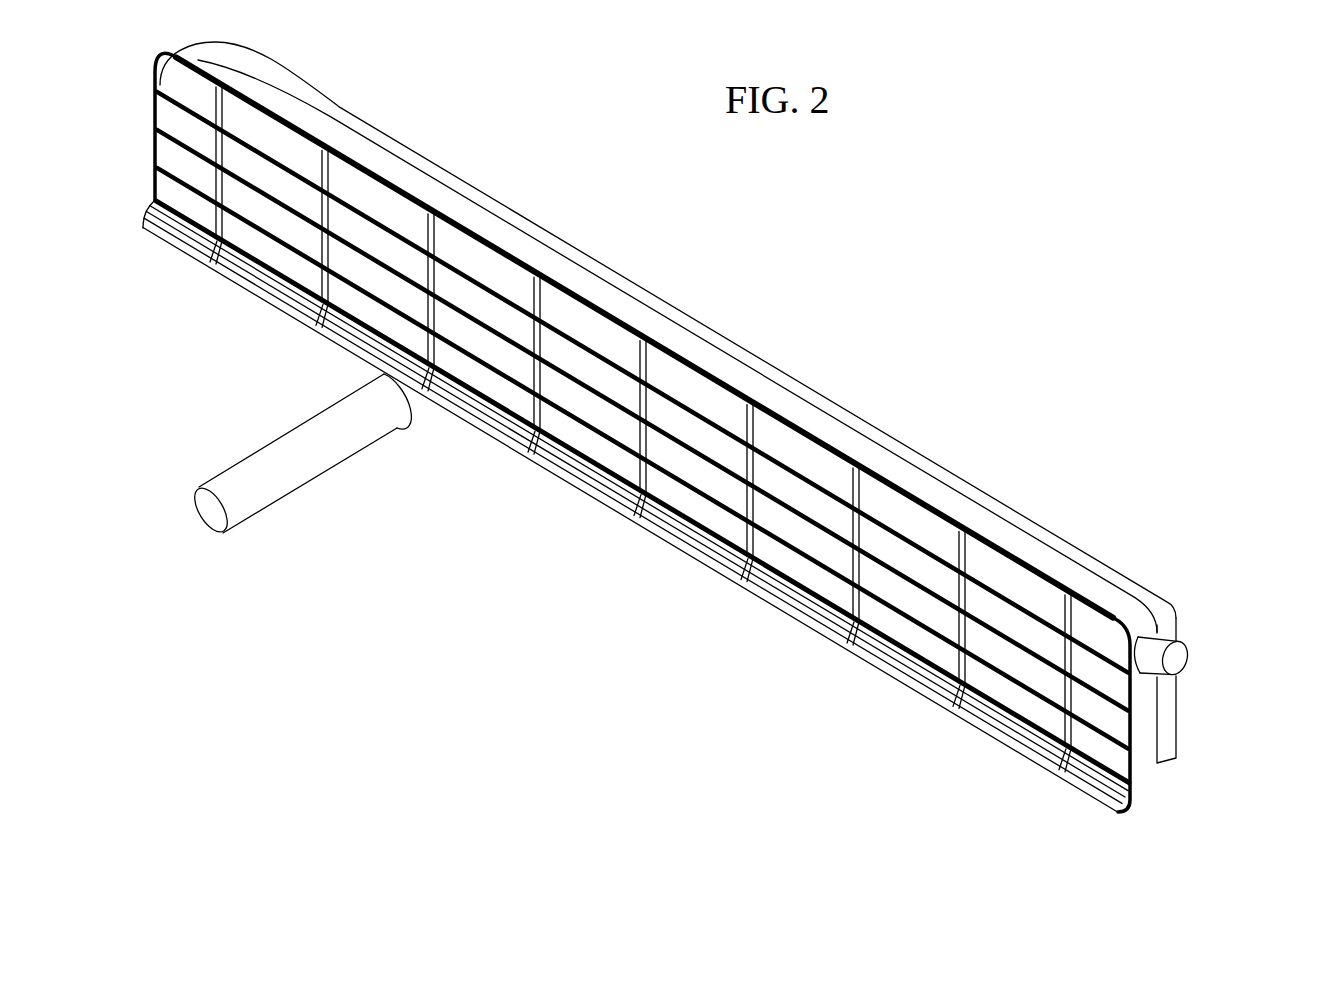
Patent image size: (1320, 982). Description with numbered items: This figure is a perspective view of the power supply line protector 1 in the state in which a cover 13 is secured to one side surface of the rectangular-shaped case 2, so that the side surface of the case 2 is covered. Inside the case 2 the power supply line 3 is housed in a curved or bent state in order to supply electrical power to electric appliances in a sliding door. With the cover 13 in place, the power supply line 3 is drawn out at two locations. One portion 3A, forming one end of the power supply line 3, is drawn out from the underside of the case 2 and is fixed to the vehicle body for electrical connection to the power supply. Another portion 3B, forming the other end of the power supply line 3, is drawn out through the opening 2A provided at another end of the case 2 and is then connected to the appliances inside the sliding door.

The power supply line protector 1 is at (687, 297).
The case 2 is at (960, 495).
The opening 2A is at (1152, 677).
The power supply line 3 is at (728, 526).
The portion of power supply line 3A is at (283, 477).
The portion of power supply line 3B is at (1180, 638).
The cover 13 is at (790, 410).